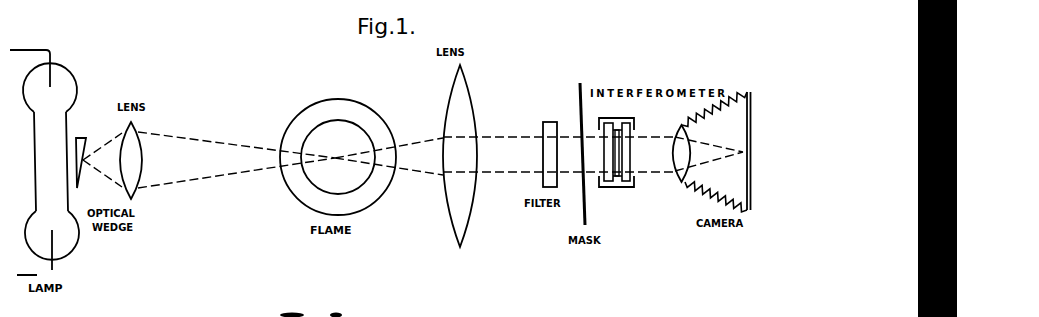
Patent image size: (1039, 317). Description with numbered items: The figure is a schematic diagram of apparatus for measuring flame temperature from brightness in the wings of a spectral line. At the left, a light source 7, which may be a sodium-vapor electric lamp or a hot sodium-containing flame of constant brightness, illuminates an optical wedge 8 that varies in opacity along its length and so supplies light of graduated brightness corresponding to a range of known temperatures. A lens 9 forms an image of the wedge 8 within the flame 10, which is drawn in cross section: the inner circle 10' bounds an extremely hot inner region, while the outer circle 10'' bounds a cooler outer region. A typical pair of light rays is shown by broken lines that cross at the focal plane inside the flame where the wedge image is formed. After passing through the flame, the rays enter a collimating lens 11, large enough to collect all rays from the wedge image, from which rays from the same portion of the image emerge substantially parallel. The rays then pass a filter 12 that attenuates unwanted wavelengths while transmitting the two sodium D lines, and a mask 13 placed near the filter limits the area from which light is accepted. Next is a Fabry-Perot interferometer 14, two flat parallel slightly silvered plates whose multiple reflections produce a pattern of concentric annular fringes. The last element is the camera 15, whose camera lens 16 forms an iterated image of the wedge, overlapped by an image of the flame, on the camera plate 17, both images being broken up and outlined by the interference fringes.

The light source 7 is at (75, 82).
The optical wedge 8 is at (84, 138).
The lens 9 is at (132, 142).
The flame 10 is at (353, 146).
The inner circle 10' is at (351, 141).
The outer circle 10'' is at (353, 157).
The collimating lens 11 is at (465, 98).
The filter 12 is at (550, 122).
The mask 13 is at (581, 82).
The Fabry-Perot interferometer 14 is at (620, 118).
The camera 15 is at (700, 190).
The camera lens 16 is at (675, 167).
The camera plate 17 is at (749, 176).